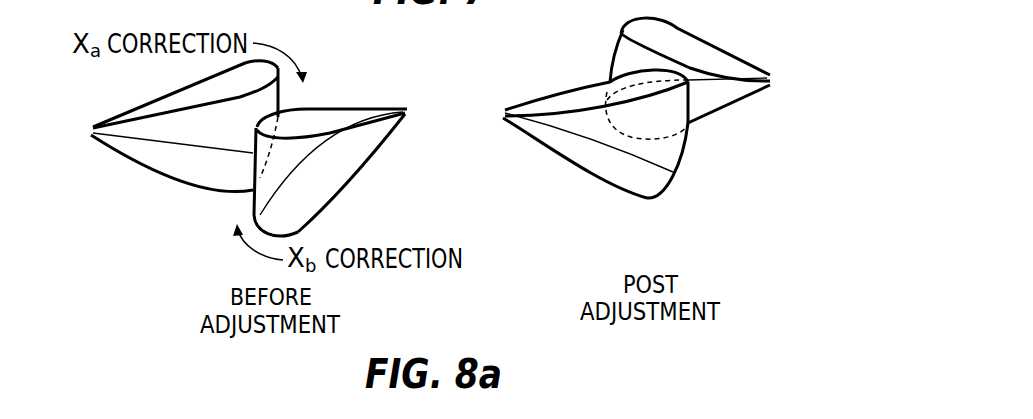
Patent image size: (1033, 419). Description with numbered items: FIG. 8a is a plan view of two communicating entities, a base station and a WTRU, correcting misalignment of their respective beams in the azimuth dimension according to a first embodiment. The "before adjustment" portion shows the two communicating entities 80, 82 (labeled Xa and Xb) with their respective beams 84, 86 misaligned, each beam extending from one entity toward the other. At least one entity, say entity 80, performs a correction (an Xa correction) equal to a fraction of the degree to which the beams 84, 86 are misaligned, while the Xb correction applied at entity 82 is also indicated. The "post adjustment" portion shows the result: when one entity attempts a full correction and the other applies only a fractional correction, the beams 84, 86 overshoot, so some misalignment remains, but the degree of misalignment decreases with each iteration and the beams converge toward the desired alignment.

The communicating entity 80 is at (62, 143).
The communicating entity 82 is at (412, 98).
The beam 84 is at (162, 178).
The beam 86 is at (355, 177).